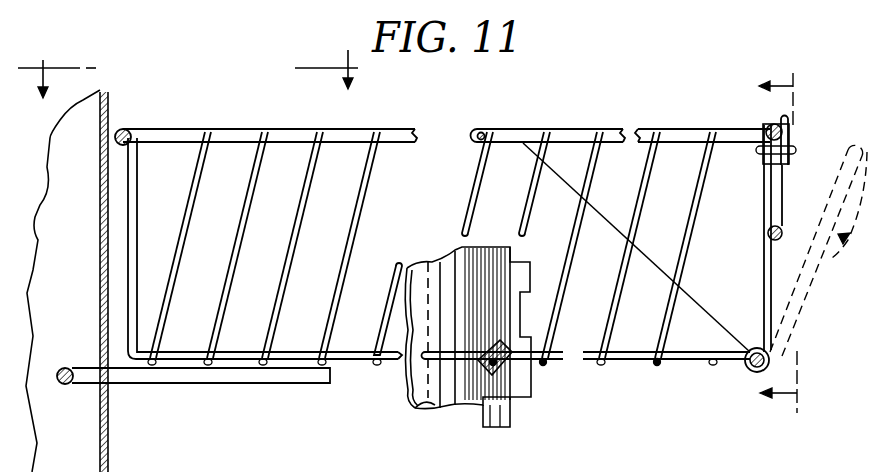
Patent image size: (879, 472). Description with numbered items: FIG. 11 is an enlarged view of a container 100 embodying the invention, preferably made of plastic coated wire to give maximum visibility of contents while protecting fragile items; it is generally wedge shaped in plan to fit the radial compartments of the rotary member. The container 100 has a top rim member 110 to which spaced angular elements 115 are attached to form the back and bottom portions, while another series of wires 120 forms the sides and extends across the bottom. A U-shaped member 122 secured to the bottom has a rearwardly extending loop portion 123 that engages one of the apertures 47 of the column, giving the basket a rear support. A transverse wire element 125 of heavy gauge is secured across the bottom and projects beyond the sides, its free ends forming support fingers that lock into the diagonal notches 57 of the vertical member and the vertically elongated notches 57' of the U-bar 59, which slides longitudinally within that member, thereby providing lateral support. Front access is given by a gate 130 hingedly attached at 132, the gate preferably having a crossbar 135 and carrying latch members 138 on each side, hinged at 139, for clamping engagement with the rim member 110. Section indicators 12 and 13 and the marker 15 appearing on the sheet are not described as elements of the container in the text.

The section line 12- 12 is at (799, 236).
The section line 13- 13 is at (188, 63).
The figure reference 15 is at (859, 459).
The apertures 47 is at (100, 203).
The diagonal notches 57 is at (502, 328).
The vertically elongated notches 57' is at (534, 409).
The U-bar 59 is at (426, 408).
The container 100 is at (428, 130).
The top rim member 110 is at (173, 135).
The angular elements 115 is at (135, 217).
The wires 120 is at (477, 170).
The U-shaped member 122 is at (235, 377).
The loop portion 123 is at (64, 387).
The transverse wire element 125 is at (490, 367).
The gate 130 is at (777, 291).
The hinge 132 is at (770, 352).
The crossbar 135 is at (783, 236).
The latch members 138 is at (788, 118).
The latch hinge 139 is at (791, 153).